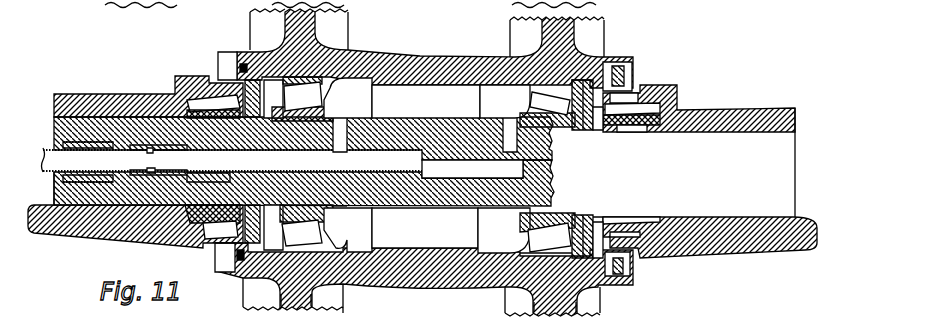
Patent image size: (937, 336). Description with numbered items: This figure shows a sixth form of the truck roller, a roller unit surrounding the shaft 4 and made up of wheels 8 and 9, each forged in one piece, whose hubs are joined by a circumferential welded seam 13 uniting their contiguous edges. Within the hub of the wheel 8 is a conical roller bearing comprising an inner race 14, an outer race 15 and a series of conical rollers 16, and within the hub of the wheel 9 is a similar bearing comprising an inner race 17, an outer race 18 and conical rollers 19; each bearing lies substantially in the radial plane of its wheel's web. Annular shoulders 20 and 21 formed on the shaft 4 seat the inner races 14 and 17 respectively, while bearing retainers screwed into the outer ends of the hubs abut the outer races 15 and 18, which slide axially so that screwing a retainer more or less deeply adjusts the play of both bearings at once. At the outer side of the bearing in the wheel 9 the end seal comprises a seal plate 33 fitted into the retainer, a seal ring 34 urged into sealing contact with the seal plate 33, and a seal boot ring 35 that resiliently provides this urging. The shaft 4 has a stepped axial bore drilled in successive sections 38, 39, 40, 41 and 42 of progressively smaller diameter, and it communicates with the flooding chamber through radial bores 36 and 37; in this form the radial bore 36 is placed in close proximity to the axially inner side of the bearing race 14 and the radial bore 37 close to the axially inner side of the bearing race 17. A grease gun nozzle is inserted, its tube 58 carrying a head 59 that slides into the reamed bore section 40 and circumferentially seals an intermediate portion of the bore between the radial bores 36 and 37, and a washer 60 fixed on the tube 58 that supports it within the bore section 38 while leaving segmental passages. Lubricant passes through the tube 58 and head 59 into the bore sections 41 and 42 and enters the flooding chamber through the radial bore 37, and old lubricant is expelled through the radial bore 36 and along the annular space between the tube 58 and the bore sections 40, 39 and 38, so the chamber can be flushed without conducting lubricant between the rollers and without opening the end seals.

The shaft 4 is at (460, 213).
The wheel 8 is at (259, 304).
The wheel 9 is at (510, 303).
The welded seam 13 is at (424, 262).
The inner race 14 is at (326, 233).
The outer race 15 is at (320, 93).
The conical rollers 16 is at (298, 227).
The inner race 17 is at (531, 100).
The outer race 18 is at (533, 250).
The conical rollers 19 is at (556, 235).
The annular shoulder 20 is at (340, 221).
The annular shoulder 21 is at (518, 228).
The seal plate 33 is at (602, 130).
The seal ring 34 is at (610, 220).
The seal boot ring 35 is at (636, 126).
The radial bore 36 is at (343, 120).
The radial bore 37 is at (504, 124).
The bore section 38 is at (135, 209).
The bore section 39 is at (147, 188).
The bore section 40 is at (304, 183).
The bore section 41 is at (456, 189).
The bore section 42 is at (472, 169).
The tube 58 is at (208, 158).
The head 59 is at (408, 150).
The washer 60 is at (152, 132).